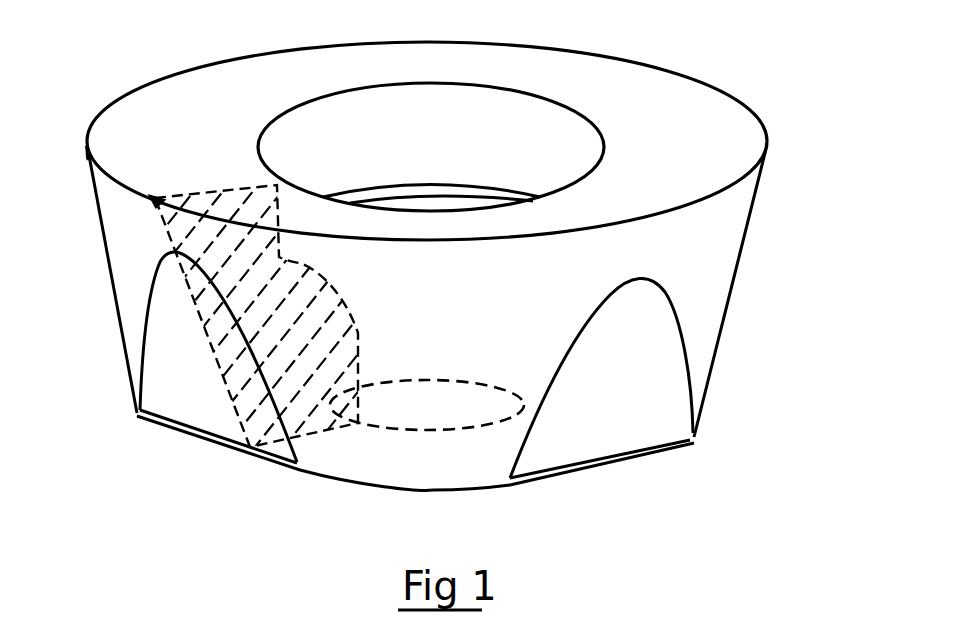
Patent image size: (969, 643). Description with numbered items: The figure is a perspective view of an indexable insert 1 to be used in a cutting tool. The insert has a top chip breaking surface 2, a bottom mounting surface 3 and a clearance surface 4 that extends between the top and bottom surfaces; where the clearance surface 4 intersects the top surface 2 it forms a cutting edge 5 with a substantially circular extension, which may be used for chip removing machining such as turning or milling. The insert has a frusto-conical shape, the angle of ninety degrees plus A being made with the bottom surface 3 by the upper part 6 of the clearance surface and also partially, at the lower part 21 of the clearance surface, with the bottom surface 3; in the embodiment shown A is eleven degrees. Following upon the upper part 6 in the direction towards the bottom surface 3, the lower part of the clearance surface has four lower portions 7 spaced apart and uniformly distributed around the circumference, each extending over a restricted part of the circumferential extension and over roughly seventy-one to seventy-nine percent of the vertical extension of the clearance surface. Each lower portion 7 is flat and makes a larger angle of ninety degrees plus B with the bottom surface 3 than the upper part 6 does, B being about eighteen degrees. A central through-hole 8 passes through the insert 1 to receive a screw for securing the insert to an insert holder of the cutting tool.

The indexable insert 1 is at (735, 279).
The top chip breaking surface 2 is at (118, 122).
The bottom mounting surface 3 is at (392, 482).
The clearance surface 4 is at (103, 236).
The cutting edge 5 is at (86, 151).
The upper part 6 is at (624, 256).
The lower portions 7 is at (180, 406).
The central through-hole 8 is at (553, 127).
The lower part of the clearance surface 21 is at (462, 448).